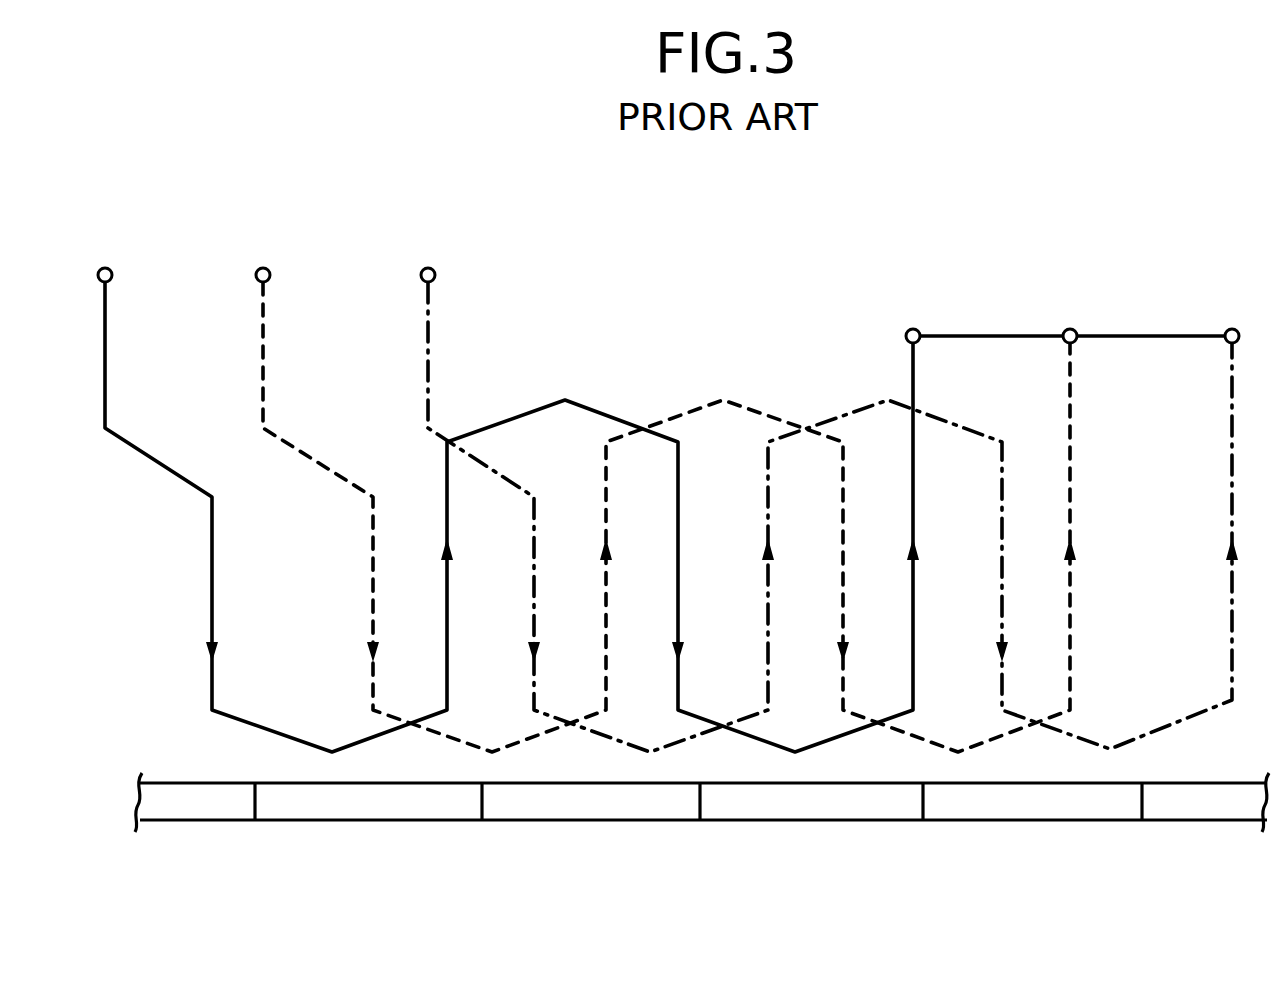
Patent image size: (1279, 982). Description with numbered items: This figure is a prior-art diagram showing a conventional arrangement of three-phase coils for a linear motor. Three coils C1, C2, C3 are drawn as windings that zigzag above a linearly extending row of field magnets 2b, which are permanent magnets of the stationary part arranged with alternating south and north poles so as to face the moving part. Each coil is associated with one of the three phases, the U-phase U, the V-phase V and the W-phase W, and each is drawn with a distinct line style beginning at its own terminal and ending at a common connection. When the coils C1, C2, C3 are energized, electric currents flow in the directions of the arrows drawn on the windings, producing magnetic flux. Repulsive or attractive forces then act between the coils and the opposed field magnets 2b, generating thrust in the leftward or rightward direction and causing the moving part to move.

The field magnets 2b is at (1158, 820).
The coil C1 is at (108, 250).
The coil C2 is at (266, 250).
The coil C3 is at (431, 250).
The U-phase U is at (490, 517).
The V-phase V is at (650, 517).
The W-phase W is at (833, 517).